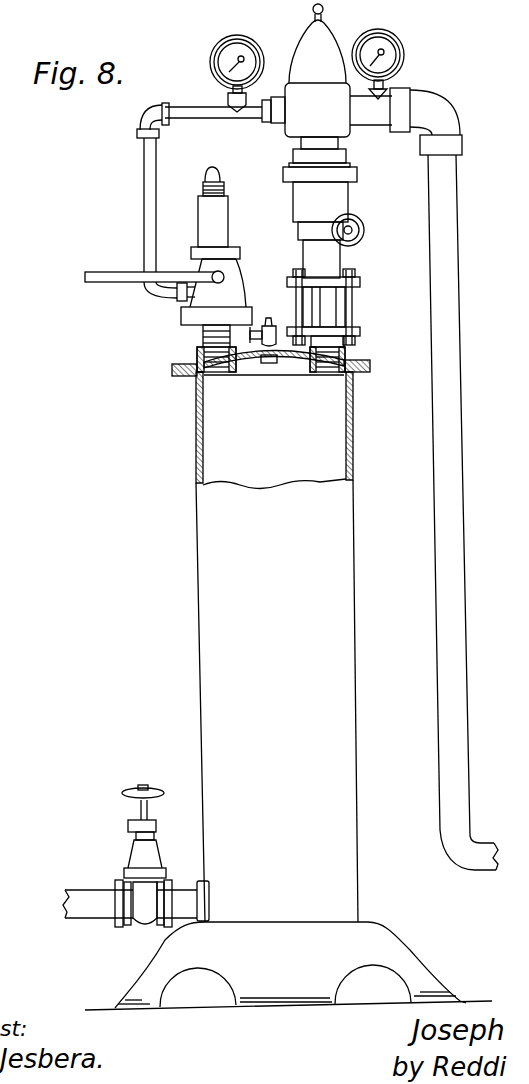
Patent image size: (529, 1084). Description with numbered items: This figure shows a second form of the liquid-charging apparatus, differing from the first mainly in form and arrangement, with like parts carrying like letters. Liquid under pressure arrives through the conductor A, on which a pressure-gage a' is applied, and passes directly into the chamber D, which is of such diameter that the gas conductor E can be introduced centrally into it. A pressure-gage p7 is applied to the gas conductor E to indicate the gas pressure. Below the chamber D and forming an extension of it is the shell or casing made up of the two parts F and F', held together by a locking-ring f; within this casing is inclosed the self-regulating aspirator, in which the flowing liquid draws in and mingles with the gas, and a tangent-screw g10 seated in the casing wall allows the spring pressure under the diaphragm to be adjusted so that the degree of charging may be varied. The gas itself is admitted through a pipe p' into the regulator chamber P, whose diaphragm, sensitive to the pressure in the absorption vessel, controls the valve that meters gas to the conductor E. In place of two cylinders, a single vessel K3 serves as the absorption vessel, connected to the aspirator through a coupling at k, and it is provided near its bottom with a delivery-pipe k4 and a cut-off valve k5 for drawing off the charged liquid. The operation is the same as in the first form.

The conductor A is at (440, 523).
The gas inlet or conductor E is at (252, 112).
The pressure-gage p7 is at (249, 46).
The pressure-gage a' is at (393, 64).
The chamber D is at (317, 70).
The shell part F is at (338, 151).
The locking-ring f is at (350, 176).
The shell part F' is at (345, 230).
The tangent-screw g10 is at (365, 231).
The observation-glass k is at (338, 308).
The chamber P is at (229, 288).
The pipe p' is at (154, 256).
The single vessel K3 is at (288, 664).
The delivery-pipe k4 is at (90, 900).
The cut-off valve k5 is at (146, 884).